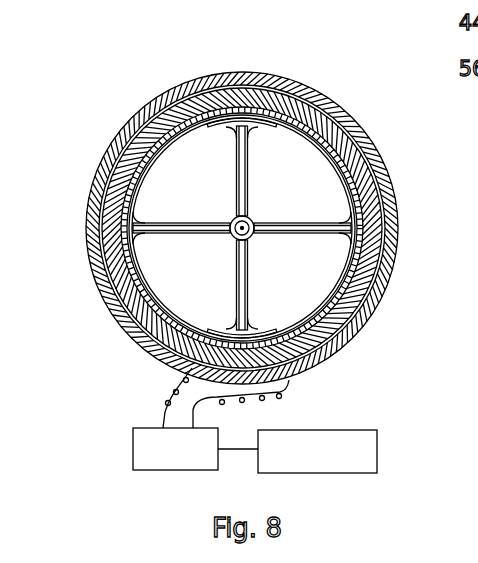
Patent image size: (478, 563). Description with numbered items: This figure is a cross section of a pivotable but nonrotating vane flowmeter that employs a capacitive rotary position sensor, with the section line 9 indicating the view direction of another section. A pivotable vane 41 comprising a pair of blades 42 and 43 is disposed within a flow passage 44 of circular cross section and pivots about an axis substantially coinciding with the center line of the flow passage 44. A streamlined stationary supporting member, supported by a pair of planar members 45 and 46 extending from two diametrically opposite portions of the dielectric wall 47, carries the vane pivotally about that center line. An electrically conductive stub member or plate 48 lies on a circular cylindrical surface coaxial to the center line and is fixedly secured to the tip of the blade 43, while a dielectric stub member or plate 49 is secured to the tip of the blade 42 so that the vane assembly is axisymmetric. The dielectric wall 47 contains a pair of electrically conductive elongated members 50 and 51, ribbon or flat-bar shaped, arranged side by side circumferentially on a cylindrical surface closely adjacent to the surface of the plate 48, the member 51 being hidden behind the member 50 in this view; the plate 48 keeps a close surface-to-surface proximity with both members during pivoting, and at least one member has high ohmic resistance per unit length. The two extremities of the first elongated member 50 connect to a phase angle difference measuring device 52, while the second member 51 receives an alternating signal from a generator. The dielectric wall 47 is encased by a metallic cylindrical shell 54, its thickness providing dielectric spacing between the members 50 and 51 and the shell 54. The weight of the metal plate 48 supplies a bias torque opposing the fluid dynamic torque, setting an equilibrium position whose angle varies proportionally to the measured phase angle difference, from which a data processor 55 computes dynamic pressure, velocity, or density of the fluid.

The section line 9- 9 is at (351, 103).
The pivotable vane 41 is at (222, 277).
The blade 42 is at (228, 181).
The blade 43 is at (252, 289).
The flow passage 44 is at (303, 259).
The planar member 45 is at (182, 221).
The planar member 46 is at (300, 213).
The dielectric wall 47 is at (372, 153).
The electrically conductive stub member or plate 48 is at (262, 333).
The dielectric stub member or plate 49 is at (272, 122).
The electrically conductive elongated member 50 is at (183, 95).
The electrically conductive elongated member 51 is at (226, 72).
The phase angle difference measuring device 52 is at (133, 450).
The metallic cylindrical shell 54 is at (143, 104).
The data processor 55 is at (377, 451).